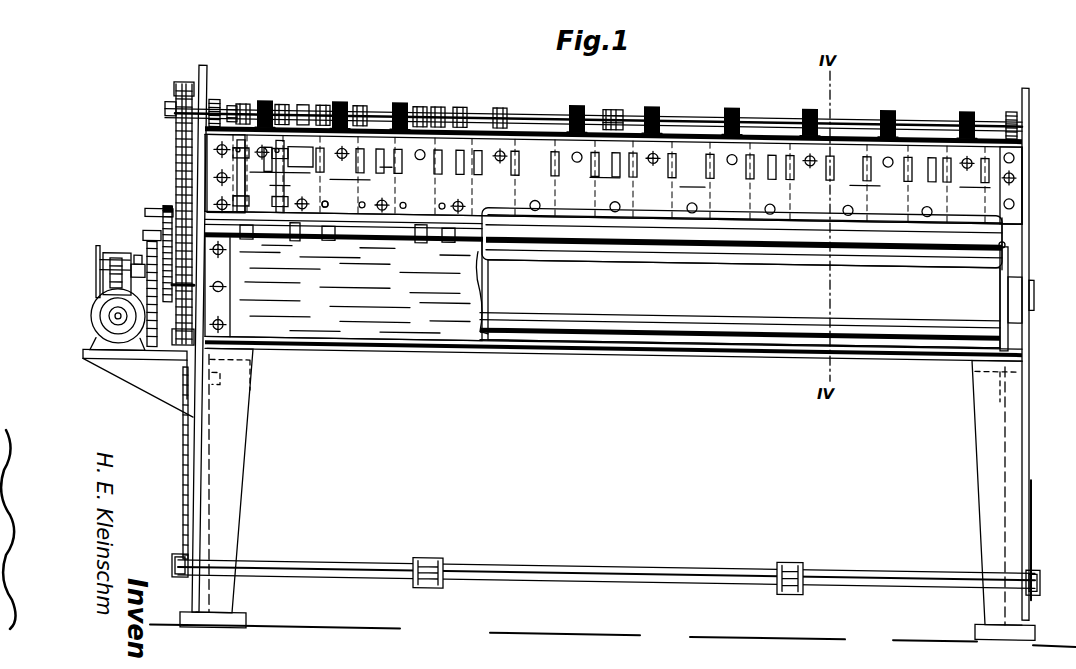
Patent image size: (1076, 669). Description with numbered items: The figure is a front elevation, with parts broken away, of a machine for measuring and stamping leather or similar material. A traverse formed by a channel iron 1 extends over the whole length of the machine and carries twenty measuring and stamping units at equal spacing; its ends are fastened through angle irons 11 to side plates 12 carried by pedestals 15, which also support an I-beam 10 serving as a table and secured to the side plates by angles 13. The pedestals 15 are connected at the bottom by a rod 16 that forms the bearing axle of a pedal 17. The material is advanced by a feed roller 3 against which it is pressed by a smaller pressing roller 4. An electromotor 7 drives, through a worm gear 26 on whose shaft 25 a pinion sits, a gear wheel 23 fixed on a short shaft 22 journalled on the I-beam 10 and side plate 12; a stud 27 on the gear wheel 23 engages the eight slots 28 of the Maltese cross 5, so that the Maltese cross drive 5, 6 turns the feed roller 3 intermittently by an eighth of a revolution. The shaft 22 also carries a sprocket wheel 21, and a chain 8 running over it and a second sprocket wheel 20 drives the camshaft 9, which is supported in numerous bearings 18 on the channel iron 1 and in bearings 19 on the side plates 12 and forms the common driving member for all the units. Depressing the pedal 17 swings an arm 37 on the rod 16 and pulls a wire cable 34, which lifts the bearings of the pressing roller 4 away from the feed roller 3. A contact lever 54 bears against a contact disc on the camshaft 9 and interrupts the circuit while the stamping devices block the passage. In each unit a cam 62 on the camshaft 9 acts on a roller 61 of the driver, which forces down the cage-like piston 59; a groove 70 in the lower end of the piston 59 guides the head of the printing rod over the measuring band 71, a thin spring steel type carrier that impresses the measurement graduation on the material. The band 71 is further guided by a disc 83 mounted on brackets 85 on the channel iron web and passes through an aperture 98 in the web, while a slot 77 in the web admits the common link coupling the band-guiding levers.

The channel iron 1 is at (392, 184).
The feed roller 3 is at (525, 336).
The pressing roller 4 is at (507, 206).
The Maltese cross 5 is at (157, 343).
The Maltese cross drive member 6 is at (158, 228).
The electromotor 7 is at (92, 318).
The chain 8 is at (207, 150).
The camshaft 9 is at (165, 108).
The I-beam 10 is at (410, 349).
The angle iron 11 is at (1022, 190).
The side plate 12 is at (202, 48).
The angle 13 is at (232, 310).
The pedestal 15 is at (238, 445).
The rod 16 is at (316, 561).
The pedal 17 is at (443, 557).
The bearing 18 is at (268, 100).
The bearing 19 is at (216, 100).
The sprocket wheel 20 is at (176, 86).
The sprocket wheel 21 is at (180, 298).
The short shaft 22 is at (112, 323).
The gear wheel 23 is at (168, 207).
The shaft 25 is at (96, 273).
The worm gear 26 is at (1014, 300).
The stud 27 is at (155, 210).
The slot 28 is at (143, 237).
The wire cable 34 is at (183, 483).
The arm 37 is at (172, 576).
The contact lever 54 is at (184, 83).
The piston-like member 59 is at (248, 240).
The roller 61 is at (303, 104).
The cam 62 is at (246, 104).
The groove 70 is at (296, 242).
The measuring band 71 is at (246, 172).
The slot 77 is at (328, 203).
The disc 83 is at (238, 100).
The bracket 85 is at (301, 156).
The aperture 98 is at (657, 164).